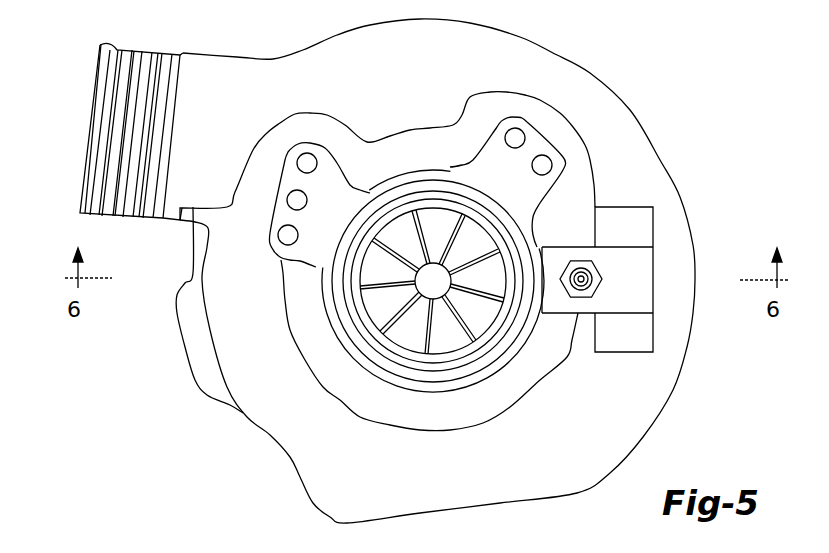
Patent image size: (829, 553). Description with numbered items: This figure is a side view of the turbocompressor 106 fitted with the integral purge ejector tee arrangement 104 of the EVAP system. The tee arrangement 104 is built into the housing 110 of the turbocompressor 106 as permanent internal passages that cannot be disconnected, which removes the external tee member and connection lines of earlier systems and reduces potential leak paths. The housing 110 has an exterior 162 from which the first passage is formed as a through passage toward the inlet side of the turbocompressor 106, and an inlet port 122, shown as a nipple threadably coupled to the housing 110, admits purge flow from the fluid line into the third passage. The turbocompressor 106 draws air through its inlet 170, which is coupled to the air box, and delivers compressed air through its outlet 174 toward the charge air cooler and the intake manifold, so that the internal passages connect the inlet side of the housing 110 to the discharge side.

The integral purge ejector tee arrangement 104 is at (661, 246).
The turbocompressor 106 is at (661, 62).
The housing 110 is at (517, 485).
The inlet port 122 is at (588, 270).
The exterior 162 is at (711, 330).
The inlet 170 is at (453, 357).
The outlet 174 is at (95, 78).